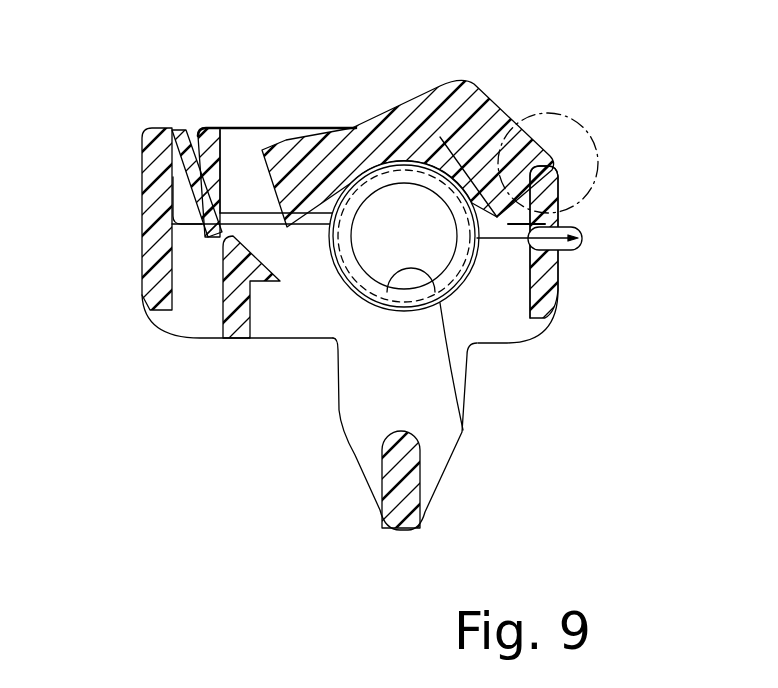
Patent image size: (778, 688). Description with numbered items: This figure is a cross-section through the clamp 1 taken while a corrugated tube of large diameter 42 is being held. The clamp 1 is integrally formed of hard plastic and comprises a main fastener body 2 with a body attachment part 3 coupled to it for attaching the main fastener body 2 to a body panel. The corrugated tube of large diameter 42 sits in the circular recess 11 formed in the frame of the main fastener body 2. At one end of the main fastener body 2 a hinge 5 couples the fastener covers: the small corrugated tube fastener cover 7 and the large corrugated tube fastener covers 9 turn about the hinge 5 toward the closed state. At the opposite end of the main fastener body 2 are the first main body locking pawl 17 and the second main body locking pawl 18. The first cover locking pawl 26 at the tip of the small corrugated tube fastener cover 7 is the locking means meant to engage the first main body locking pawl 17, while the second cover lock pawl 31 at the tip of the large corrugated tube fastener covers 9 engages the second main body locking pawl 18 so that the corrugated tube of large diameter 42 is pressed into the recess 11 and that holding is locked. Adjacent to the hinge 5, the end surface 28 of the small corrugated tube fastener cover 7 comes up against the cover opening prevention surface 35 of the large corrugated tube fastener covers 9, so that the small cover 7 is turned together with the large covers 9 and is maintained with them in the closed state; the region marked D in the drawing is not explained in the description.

The clamp 1 is at (574, 327).
The main fastener body 2 is at (141, 296).
The body attachment part 3 is at (340, 447).
The hinge 5 is at (588, 238).
The small corrugated tube fastener cover 7 is at (425, 112).
The large corrugated tube fastener cover 9 is at (255, 142).
The circular recess 11 is at (463, 430).
The first main body locking pawl 17 is at (265, 270).
The second main body locking pawl 18 is at (194, 165).
The first cover locking pawl 26 is at (270, 160).
The end surface 28 is at (568, 163).
The second cover lock pawl 31 is at (190, 185).
The cover opening prevention surface 35 is at (510, 240).
The corrugated tube of large diameter 42 is at (362, 303).
The direction D is at (560, 108).